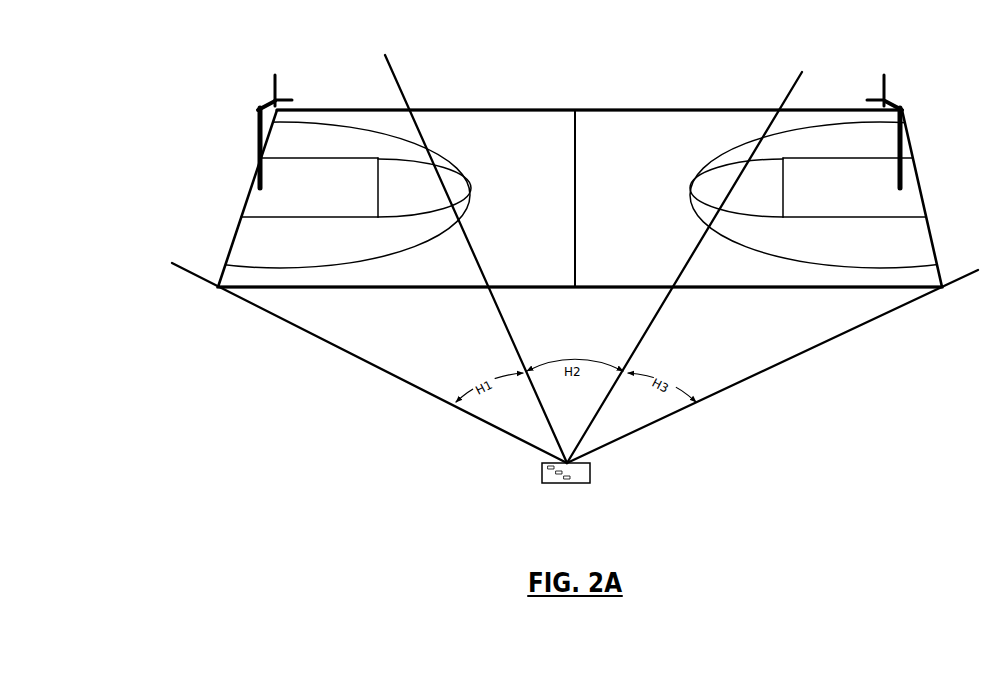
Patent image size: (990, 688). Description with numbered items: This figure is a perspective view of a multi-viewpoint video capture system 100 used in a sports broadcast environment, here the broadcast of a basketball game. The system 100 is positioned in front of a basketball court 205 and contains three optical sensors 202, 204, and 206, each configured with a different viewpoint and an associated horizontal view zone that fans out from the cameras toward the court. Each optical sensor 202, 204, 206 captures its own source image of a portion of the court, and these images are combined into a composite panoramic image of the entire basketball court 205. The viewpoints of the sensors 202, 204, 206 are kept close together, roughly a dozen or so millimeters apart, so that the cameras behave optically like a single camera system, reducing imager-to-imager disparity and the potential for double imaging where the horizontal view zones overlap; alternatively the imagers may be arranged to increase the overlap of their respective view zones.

The basketball court 205 is at (628, 110).
The camera system 100 is at (576, 473).
The optical sensor 202 is at (542, 480).
The optical sensor 204 is at (542, 474).
The optical sensor 206 is at (542, 469).